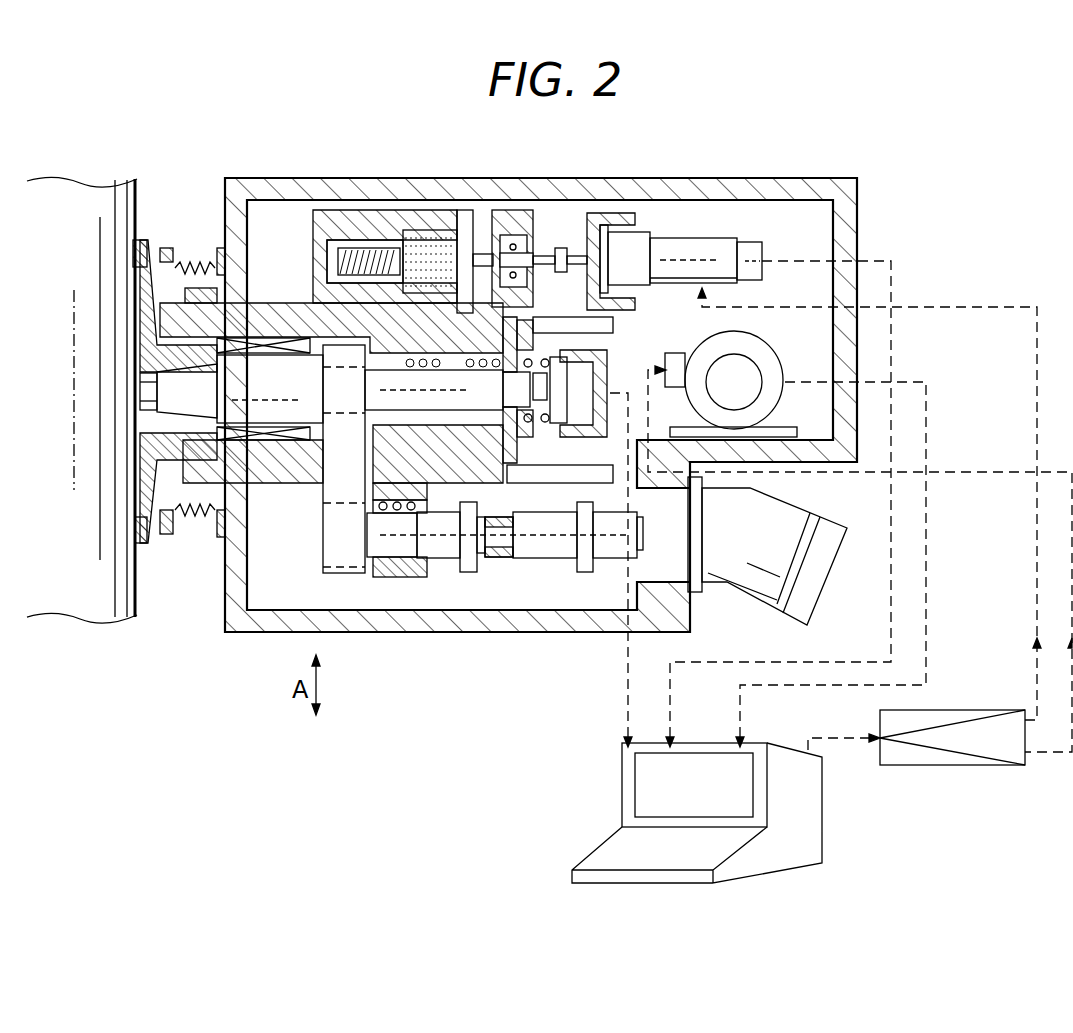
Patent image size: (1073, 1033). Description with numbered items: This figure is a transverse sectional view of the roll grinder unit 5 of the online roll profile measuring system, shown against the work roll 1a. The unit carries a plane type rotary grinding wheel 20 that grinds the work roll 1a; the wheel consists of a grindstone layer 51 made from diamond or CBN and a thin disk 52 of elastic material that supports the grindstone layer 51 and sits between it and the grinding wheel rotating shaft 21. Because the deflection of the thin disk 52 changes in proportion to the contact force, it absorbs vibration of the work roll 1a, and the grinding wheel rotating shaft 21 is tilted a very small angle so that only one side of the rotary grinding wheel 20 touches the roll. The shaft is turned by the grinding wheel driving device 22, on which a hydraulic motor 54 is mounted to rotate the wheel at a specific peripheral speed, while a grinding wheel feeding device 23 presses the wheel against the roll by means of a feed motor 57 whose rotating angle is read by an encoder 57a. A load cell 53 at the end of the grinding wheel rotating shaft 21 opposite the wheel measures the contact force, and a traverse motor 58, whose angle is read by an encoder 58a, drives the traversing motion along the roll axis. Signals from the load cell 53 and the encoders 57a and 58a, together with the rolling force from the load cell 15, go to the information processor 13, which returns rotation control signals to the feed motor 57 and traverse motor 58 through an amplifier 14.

The work roll 1a is at (60, 600).
The grindstone layer 51 is at (147, 240).
The thin disk 52 is at (158, 240).
The rotary grinding wheel 20 is at (150, 560).
The grinding wheel rotating shaft 21 is at (272, 405).
The grinding wheel driving device 22 is at (524, 590).
The grinding wheel feeding device 23 is at (560, 228).
The load cell 53 is at (585, 372).
The feed motor 57 is at (682, 245).
The encoder 57a is at (757, 257).
The traverse motor 58 is at (770, 370).
The encoder 58a is at (725, 372).
The roll grinder unit 5 is at (812, 495).
The hydraulic motor 54 is at (765, 583).
The load cell 15 is at (612, 772).
The information processor 13 is at (812, 797).
The amplifier 14 is at (1000, 767).